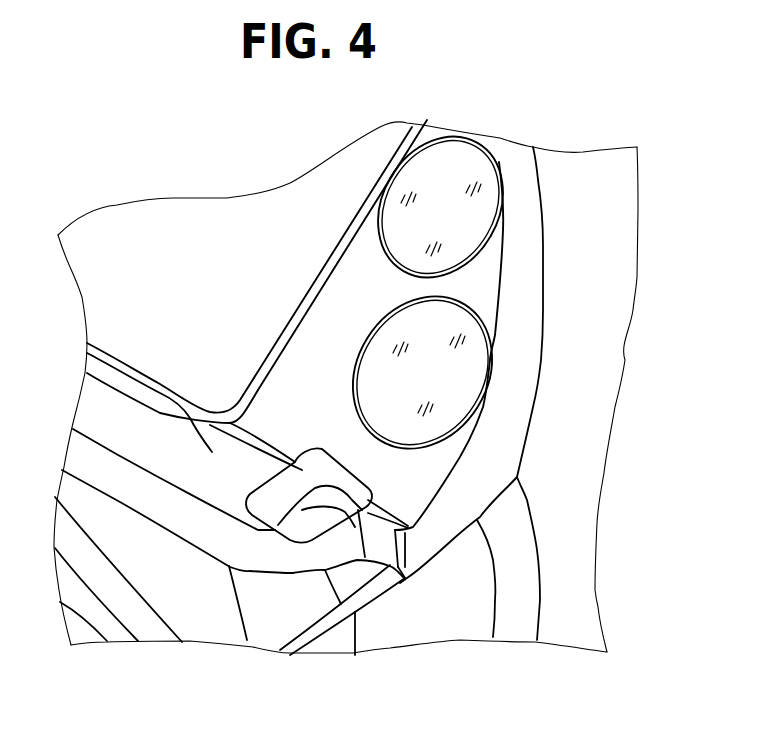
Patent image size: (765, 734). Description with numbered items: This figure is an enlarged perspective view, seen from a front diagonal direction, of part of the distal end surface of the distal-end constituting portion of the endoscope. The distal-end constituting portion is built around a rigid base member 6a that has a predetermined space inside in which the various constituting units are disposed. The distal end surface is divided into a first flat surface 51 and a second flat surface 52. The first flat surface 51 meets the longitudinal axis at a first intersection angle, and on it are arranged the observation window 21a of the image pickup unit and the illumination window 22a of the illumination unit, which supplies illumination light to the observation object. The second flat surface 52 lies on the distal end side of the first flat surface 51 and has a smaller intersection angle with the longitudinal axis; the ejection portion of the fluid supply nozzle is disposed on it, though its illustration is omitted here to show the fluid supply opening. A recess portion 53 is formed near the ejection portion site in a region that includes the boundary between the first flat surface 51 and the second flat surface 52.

The base member 6a is at (527, 412).
The observation window 21a is at (473, 367).
The illumination window 22a is at (473, 225).
The first flat surface 51 is at (360, 310).
The second flat surface 52 is at (217, 472).
The recess portion 53 is at (315, 463).